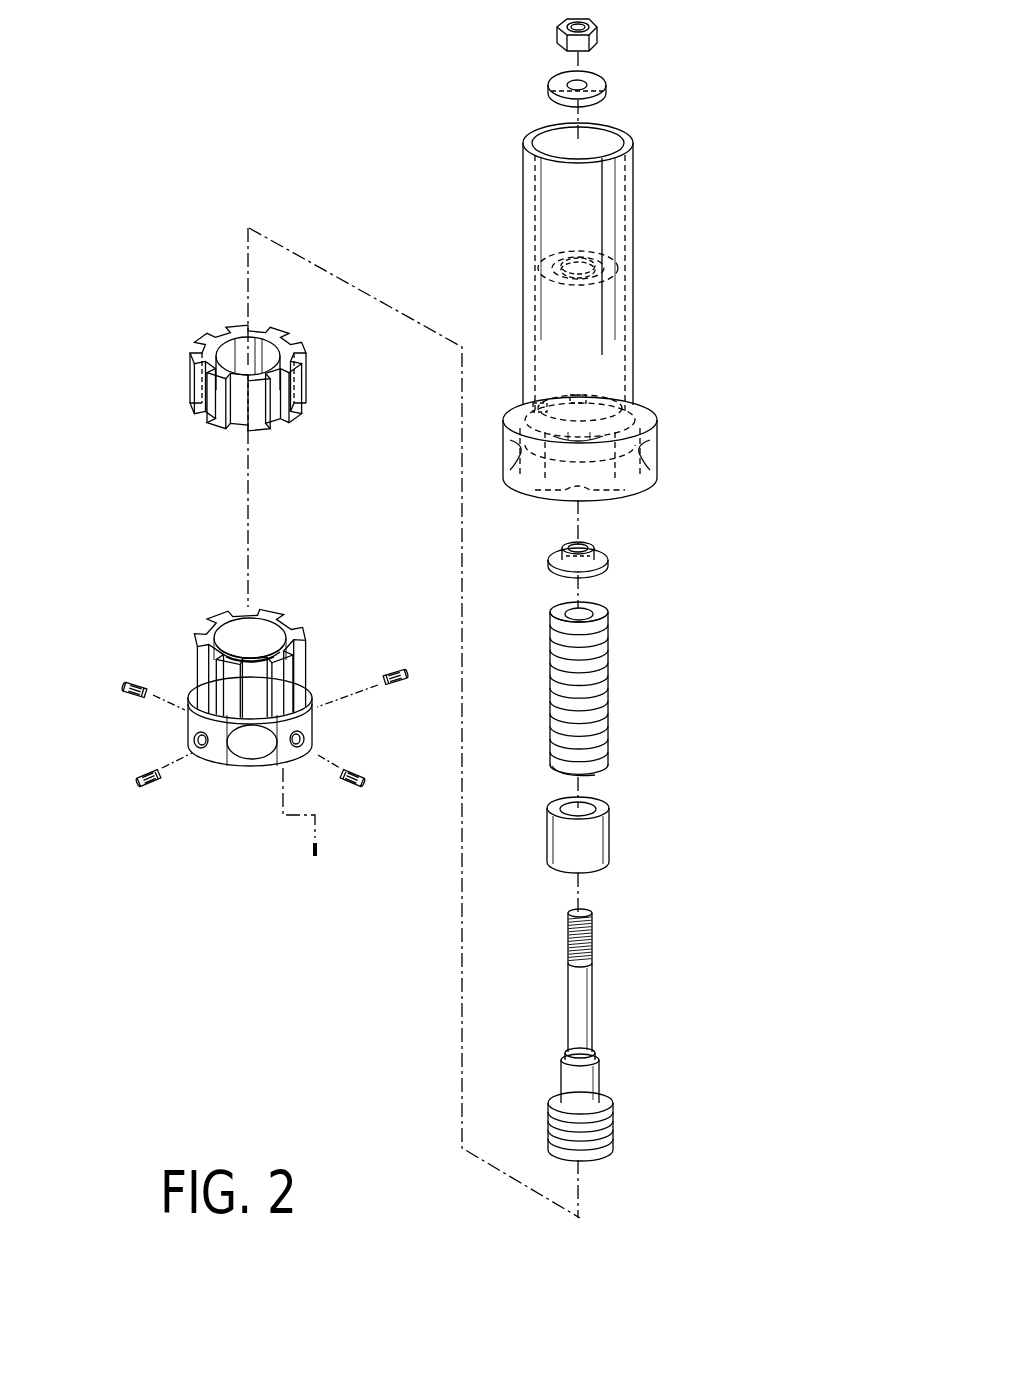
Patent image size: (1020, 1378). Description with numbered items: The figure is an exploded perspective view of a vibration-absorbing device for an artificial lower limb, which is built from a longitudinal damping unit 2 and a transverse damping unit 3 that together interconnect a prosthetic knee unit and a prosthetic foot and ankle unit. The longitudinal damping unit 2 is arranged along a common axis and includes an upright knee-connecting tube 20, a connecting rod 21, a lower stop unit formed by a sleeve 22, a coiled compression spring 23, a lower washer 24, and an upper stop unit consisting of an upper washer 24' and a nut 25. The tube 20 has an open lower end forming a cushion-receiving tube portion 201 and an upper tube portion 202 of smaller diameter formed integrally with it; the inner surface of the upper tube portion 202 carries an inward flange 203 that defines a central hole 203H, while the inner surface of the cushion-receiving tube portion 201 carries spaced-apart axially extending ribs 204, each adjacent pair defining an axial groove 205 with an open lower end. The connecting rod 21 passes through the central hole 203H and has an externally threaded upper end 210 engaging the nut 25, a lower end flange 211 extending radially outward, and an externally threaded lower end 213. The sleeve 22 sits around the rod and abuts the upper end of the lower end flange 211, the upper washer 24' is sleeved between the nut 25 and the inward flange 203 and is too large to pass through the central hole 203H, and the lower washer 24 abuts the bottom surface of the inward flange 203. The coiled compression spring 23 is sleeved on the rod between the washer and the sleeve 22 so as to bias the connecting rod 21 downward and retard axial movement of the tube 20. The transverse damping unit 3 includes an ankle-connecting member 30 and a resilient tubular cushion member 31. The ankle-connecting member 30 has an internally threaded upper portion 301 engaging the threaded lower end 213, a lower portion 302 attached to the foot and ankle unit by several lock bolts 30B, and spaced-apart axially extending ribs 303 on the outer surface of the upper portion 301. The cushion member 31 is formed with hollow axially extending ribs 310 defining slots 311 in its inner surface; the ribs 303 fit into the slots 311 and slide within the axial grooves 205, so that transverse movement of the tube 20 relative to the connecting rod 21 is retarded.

The longitudinal damping unit 2 is at (709, 635).
The upright knee-connecting tube 20 is at (631, 322).
The cushion-receiving tube portion 201 is at (628, 449).
The upper tube portion 202 is at (638, 264).
The inward flange 203 is at (643, 252).
The central hole 203H is at (664, 274).
The axially extending ribs 204 is at (509, 330).
The axial grooves 205 is at (490, 353).
The connecting rod 21 is at (681, 1019).
The externally threaded upper end 210 is at (661, 936).
The lower end flange 211 is at (657, 1088).
The externally threaded lower end 213 is at (651, 1132).
The sleeve 22 is at (642, 835).
The coiled compression spring 23 is at (644, 689).
The lower washer 24 is at (643, 564).
The upper washer 24' is at (634, 84).
The nut 25 is at (635, 31).
The transverse damping unit 3 is at (200, 615).
The ankle-connecting member 30 is at (200, 784).
The internally threaded upper portion 301 is at (183, 633).
The lower portion 302 is at (196, 721).
The axially extending ribs 303 is at (286, 643).
The lock bolts 30B is at (238, 747).
The tubular cushion member 31 is at (196, 371).
The hollow axially extending ribs 310 is at (298, 391).
The slots 311 is at (203, 324).